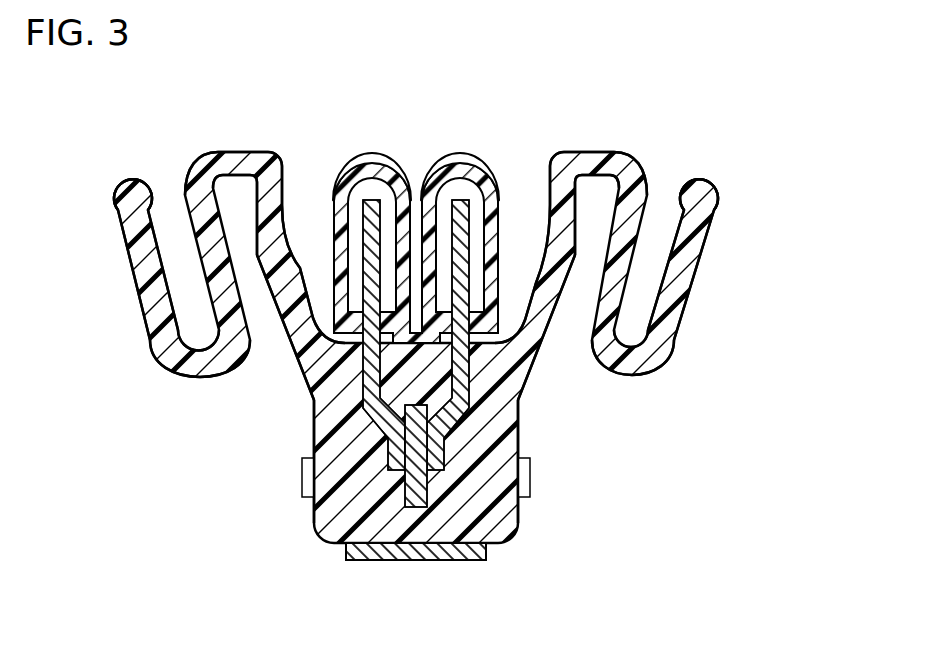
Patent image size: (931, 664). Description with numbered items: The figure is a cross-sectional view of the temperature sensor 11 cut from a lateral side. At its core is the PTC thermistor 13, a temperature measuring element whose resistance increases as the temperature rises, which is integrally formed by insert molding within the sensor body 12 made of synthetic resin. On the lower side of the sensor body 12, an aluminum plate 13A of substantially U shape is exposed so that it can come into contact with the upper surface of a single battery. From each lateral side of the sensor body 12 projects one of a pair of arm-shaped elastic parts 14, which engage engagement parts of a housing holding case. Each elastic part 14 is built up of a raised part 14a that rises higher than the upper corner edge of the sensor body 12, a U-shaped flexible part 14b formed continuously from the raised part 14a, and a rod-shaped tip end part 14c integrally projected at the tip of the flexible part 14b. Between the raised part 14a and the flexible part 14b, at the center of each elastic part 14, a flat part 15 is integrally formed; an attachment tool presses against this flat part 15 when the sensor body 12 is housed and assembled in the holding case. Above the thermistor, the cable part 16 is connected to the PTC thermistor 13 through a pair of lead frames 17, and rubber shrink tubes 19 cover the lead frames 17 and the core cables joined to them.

The temperature sensor 11 is at (525, 503).
The sensor body 12 is at (522, 440).
The PTC thermistor 13 is at (404, 478).
The aluminum plate 13A is at (437, 556).
The elastic part 14 is at (146, 308).
The raised part 14a is at (284, 308).
The flexible part 14b is at (176, 357).
The tip end part 14c is at (116, 191).
The flat part 15 is at (238, 151).
The cable part 16 is at (442, 148).
The lead frame 17 is at (366, 203).
The shrink tube 19 is at (358, 154).